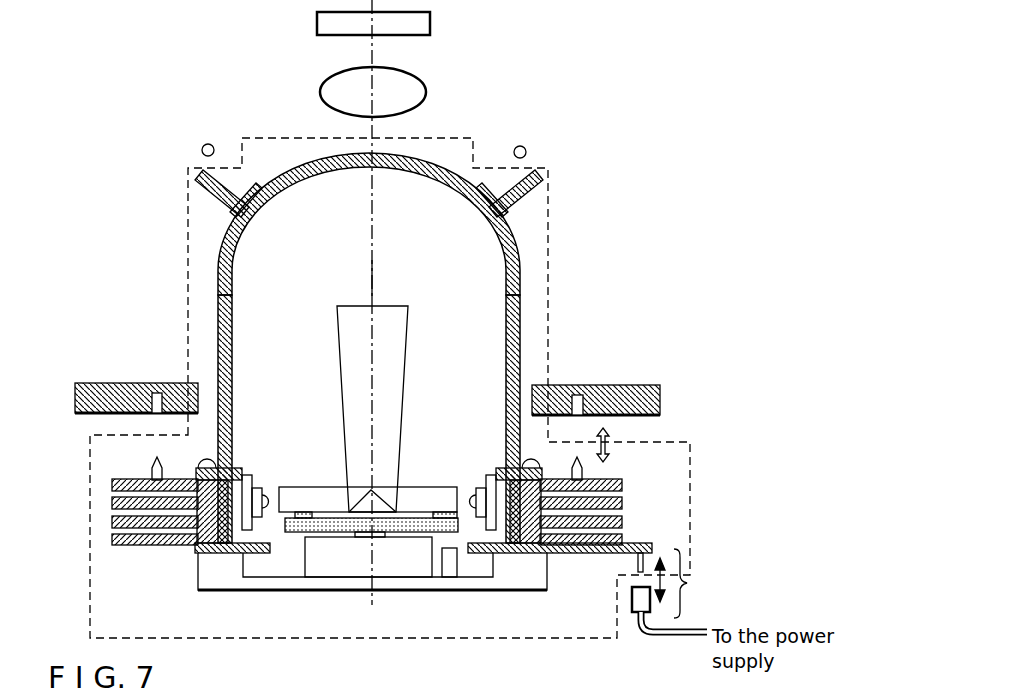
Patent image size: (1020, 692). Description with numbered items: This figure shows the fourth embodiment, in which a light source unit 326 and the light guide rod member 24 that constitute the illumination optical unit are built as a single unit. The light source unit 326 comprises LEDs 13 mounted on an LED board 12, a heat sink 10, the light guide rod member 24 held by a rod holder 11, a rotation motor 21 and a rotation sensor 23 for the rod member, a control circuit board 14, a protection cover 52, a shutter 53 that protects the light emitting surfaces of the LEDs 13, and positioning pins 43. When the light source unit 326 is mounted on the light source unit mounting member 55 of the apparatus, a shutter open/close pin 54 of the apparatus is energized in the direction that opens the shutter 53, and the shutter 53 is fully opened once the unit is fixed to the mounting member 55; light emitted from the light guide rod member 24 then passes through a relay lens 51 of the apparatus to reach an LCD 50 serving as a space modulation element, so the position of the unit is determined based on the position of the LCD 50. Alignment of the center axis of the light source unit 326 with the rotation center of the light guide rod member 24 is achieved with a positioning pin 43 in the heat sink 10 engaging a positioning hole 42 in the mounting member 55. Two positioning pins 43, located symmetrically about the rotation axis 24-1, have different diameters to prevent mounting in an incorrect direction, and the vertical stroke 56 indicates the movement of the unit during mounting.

The heat sink 10 is at (112, 500).
The rod holder 11 is at (293, 532).
The LED board 12 is at (233, 466).
The LEDs 13 is at (255, 480).
The control circuit board 14 is at (566, 555).
The rotation motor 21 is at (340, 557).
The rotation sensor 23 is at (452, 562).
The light guide rod member 24 is at (352, 325).
The rotation axis 24-1 is at (374, 268).
The positioning hole 42 is at (578, 395).
The positioning pins 43 is at (150, 461).
The LCD 50 is at (433, 24).
The relay lens 51 is at (330, 76).
The protection cover 52 is at (223, 247).
The shutter 53 is at (283, 165).
The shutter open/close pin 54 is at (200, 150).
The light source unit mounting member 55 is at (640, 385).
The vertical stroke 56 is at (686, 583).
The light source unit 326 is at (556, 230).